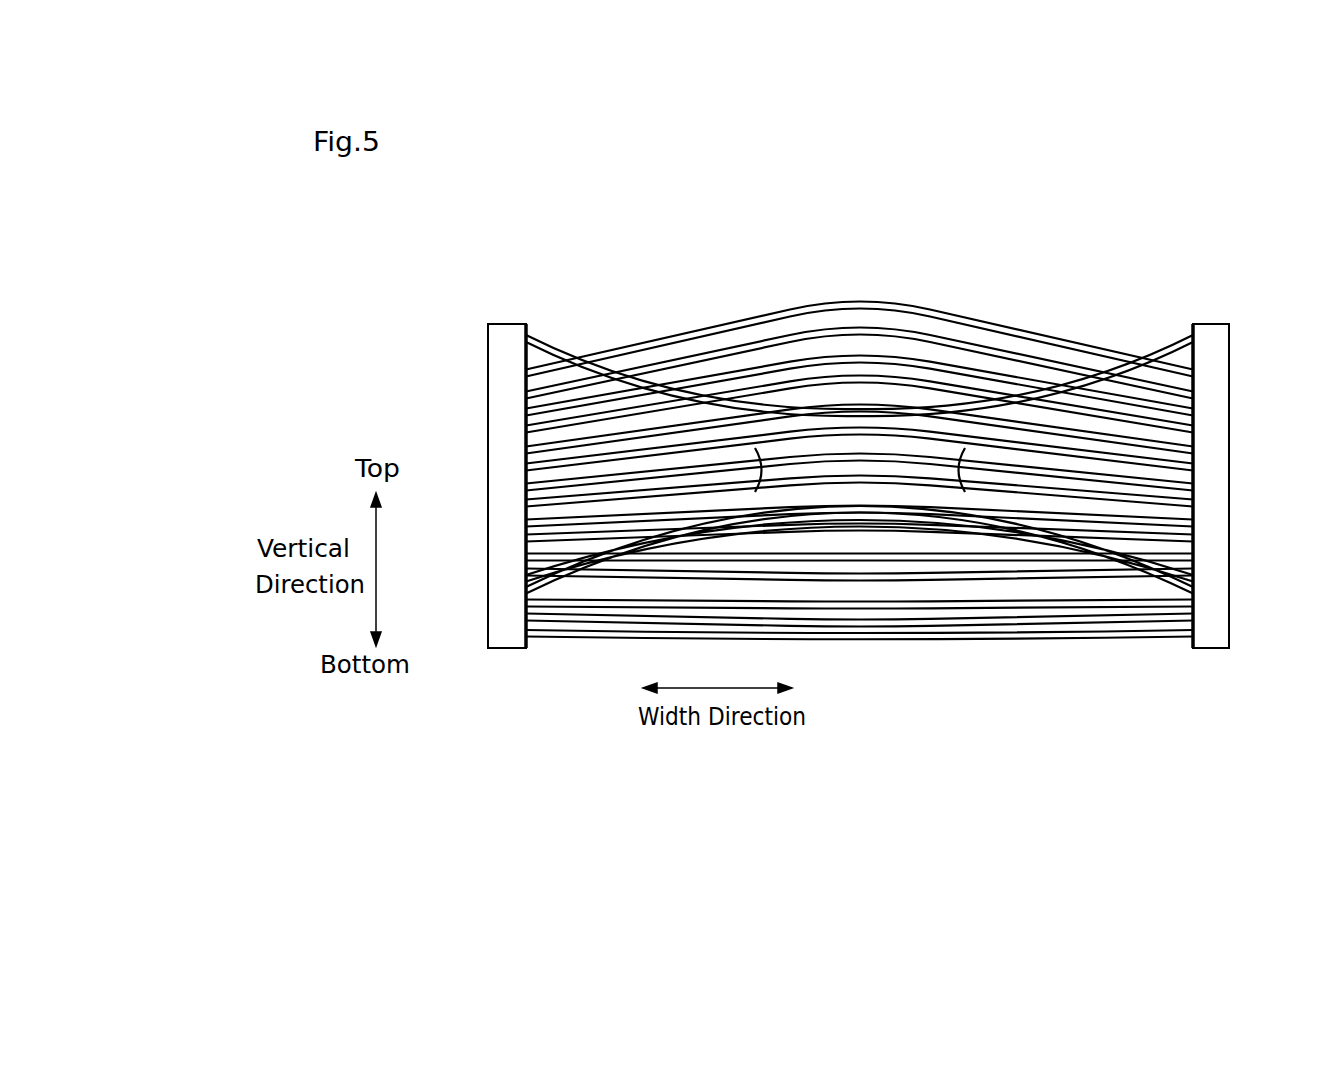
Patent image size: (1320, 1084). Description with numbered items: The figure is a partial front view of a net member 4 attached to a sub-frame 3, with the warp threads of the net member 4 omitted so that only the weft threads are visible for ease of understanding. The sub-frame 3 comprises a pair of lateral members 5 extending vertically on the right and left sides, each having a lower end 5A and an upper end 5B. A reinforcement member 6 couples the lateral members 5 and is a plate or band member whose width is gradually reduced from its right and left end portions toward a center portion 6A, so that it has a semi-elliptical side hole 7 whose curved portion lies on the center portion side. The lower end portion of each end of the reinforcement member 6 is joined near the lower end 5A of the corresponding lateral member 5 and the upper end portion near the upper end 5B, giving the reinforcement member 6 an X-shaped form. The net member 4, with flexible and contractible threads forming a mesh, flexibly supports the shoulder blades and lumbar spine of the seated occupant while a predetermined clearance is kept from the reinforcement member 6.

The sub-frame 3 is at (960, 658).
The net member 4 is at (740, 318).
The lateral member 5 is at (497, 430).
The lower end 5A is at (477, 639).
The upper end 5B is at (477, 338).
The reinforcement member 6 is at (540, 350).
The center portion 6A is at (880, 445).
The semi-elliptical side hole 7 is at (565, 462).